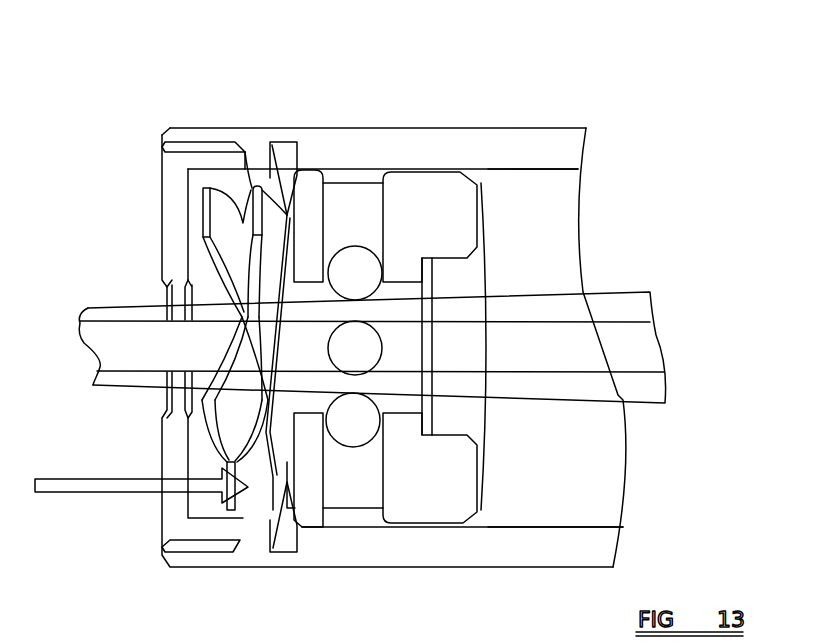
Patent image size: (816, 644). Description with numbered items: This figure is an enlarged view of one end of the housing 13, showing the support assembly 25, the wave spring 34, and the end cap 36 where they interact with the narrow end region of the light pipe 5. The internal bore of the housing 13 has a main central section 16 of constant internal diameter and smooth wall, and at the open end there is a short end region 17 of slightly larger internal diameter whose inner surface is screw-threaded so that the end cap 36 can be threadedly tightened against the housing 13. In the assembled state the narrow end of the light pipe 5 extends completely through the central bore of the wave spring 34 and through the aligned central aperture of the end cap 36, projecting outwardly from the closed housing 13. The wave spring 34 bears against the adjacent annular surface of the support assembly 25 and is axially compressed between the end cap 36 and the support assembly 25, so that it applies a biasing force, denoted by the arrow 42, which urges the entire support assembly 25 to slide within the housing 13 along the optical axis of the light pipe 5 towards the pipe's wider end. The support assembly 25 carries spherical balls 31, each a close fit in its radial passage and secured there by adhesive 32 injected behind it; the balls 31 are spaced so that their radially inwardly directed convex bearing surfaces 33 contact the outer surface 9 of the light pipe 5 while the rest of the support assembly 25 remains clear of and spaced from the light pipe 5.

The housing 13 is at (537, 128).
The main central section 16 is at (503, 189).
The end cap 36 is at (183, 240).
The wave spring 34 is at (257, 187).
The end region 17 is at (298, 142).
The adhesive 32 is at (350, 200).
The support assembly 25 is at (408, 207).
The convex bearing surfaces 33 is at (365, 305).
The spherical balls 31 is at (358, 280).
The outer surface of the light pipe 9 is at (543, 293).
The light pipe 5 is at (638, 348).
The arrow denoting biasing force 42 is at (84, 488).